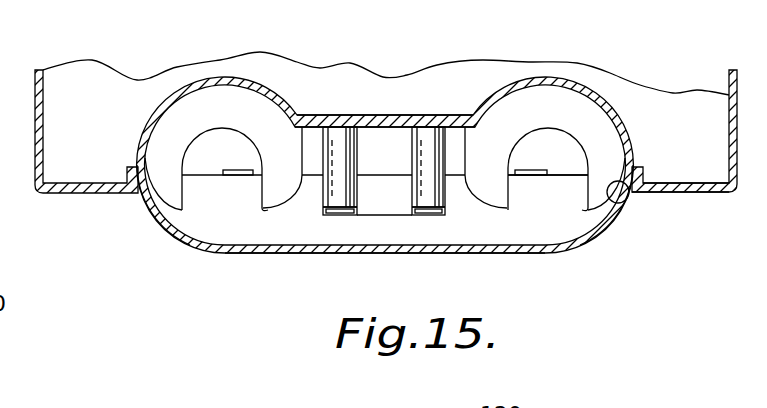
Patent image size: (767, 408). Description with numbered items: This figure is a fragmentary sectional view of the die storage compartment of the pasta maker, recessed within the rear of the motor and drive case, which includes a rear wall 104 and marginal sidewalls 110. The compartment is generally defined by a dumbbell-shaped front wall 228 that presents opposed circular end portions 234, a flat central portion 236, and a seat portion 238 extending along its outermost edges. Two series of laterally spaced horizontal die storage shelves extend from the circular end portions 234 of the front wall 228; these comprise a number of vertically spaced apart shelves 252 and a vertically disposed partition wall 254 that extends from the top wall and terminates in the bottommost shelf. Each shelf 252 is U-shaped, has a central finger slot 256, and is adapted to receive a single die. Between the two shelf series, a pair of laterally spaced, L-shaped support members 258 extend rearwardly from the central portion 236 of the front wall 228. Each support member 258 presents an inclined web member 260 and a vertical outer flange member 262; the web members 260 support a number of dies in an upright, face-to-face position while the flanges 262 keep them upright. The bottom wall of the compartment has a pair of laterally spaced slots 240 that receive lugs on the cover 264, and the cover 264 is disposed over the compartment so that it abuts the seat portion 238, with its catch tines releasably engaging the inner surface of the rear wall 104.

The rear wall 104 is at (720, 193).
The marginal sidewalls 110 is at (735, 96).
The front wall 228 is at (406, 94).
The circular end portions 234 is at (227, 80).
The flat central portion 236 is at (357, 123).
The seat portion 238 is at (157, 230).
The slots 240 is at (240, 175).
The shelves 252 is at (168, 153).
The partition wall 254 is at (468, 148).
The central finger slot 256 is at (563, 173).
The L-shaped support members 258 is at (422, 247).
The inclined web member 260 is at (325, 198).
The vertical outer flange member 262 is at (340, 214).
The cover 264 is at (188, 257).